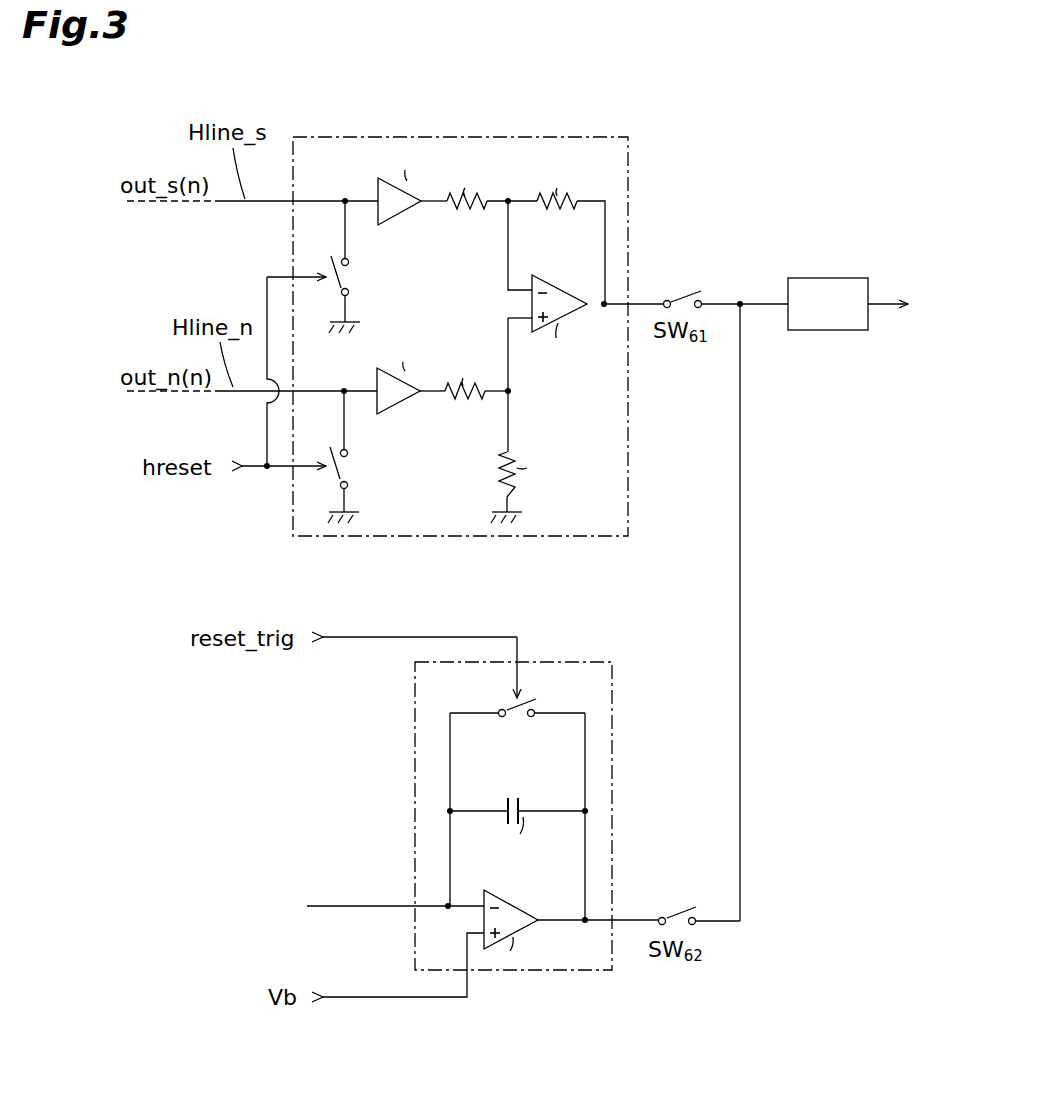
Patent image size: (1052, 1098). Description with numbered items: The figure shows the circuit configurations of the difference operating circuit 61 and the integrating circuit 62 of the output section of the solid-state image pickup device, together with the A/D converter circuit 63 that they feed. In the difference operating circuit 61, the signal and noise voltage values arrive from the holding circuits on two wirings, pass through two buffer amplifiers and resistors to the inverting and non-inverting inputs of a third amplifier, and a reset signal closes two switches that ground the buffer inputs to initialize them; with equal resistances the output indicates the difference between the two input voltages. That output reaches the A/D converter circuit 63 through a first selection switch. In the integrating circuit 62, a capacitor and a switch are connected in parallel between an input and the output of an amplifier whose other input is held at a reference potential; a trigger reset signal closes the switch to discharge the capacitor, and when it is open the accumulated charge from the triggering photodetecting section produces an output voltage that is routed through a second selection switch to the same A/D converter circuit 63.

The difference operating circuit 61 is at (337, 137).
The integrating circuit 62 is at (590, 662).
The A/D converter circuit 63 is at (832, 278).